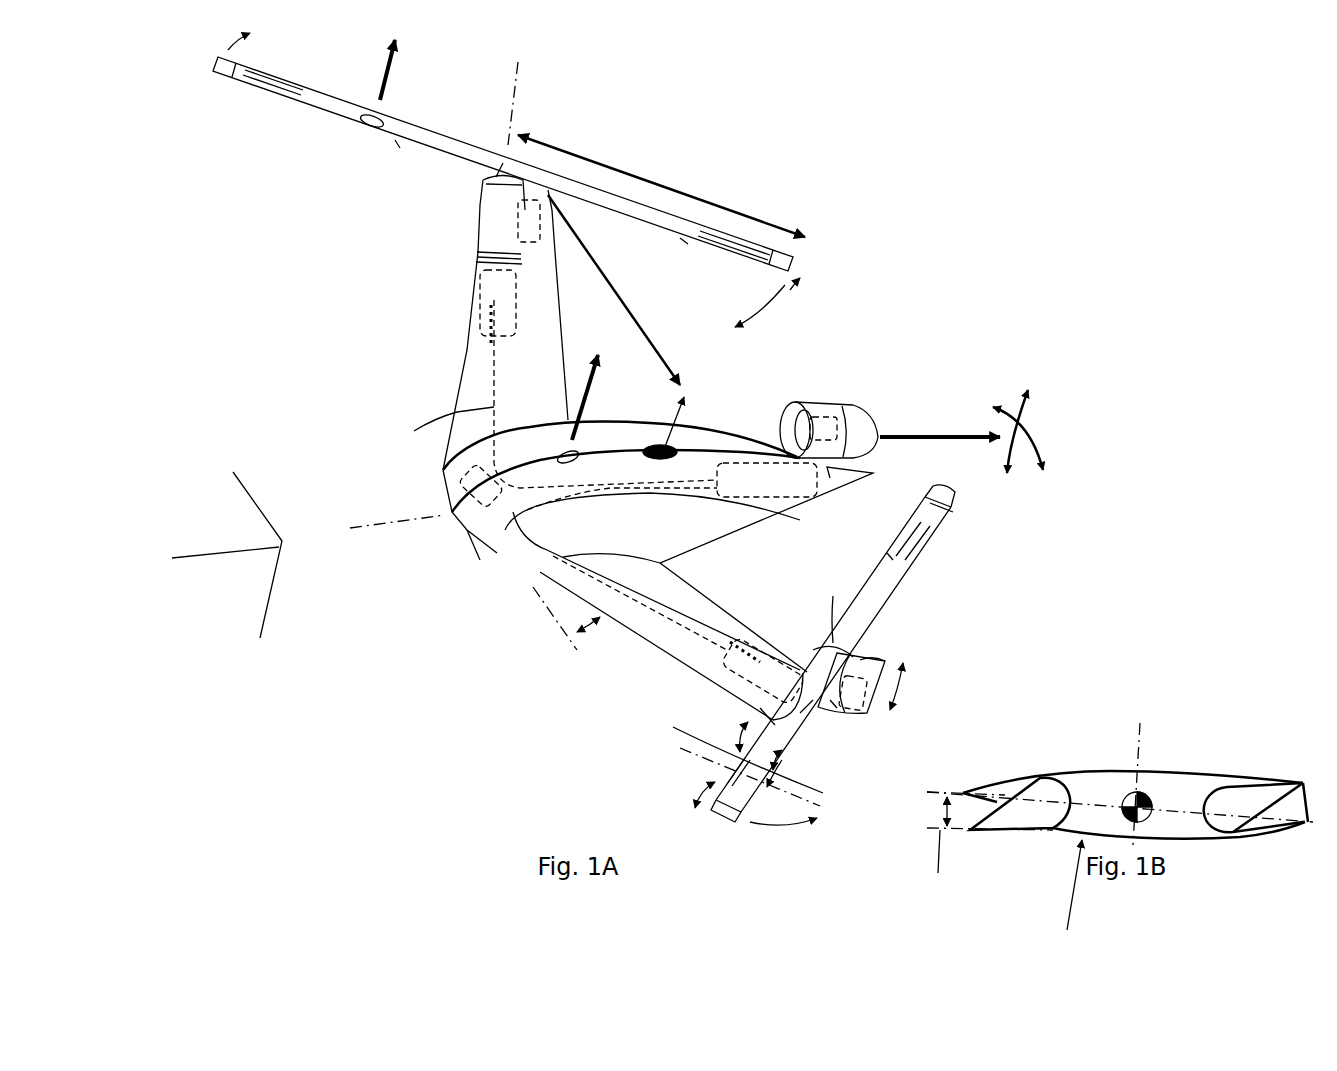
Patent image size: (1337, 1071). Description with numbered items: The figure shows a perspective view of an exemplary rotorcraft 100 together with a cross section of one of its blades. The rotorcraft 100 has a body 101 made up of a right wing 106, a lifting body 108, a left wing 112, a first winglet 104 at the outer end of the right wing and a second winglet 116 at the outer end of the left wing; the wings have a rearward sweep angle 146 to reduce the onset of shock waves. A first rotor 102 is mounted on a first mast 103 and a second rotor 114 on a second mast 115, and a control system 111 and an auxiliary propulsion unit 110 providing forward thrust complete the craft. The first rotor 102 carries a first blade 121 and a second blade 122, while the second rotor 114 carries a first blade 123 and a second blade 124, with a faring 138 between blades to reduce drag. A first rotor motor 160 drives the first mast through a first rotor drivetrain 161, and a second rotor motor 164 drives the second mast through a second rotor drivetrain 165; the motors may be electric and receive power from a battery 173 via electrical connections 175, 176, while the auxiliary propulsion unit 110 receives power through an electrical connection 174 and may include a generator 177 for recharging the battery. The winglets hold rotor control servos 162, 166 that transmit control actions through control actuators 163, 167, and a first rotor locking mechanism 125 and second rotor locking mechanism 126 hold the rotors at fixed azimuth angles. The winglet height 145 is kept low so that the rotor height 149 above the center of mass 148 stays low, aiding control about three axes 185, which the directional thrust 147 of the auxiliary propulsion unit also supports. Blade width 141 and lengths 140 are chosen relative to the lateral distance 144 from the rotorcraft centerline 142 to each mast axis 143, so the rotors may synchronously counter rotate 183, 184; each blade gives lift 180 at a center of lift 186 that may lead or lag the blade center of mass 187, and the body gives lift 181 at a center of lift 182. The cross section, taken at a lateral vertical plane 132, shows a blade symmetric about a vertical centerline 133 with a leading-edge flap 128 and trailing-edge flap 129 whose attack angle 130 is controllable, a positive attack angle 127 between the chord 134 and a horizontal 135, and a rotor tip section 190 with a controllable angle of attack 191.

In FIG. 1A, the rotorcraft 100 is at (787, 86).
In FIG. 1A, the body 101 is at (302, 395).
In FIG. 1A, the first rotor 102 is at (300, 128).
In FIG. 1A, the first mast 103 is at (503, 220).
In FIG. 1A, the first winglet 104 is at (478, 193).
In FIG. 1A, the right wing 106 is at (465, 355).
In FIG. 1A, the lifting body 108 is at (443, 487).
In FIG. 1A, the auxiliary propulsion unit 110 is at (857, 402).
In FIG. 1A, the control system 111 is at (477, 520).
In FIG. 1A, the left wing 112 is at (670, 652).
In FIG. 1A, the second rotor 114 is at (918, 585).
In FIG. 1A, the second mast 115 is at (827, 703).
In FIG. 1A, the second winglet 116 is at (830, 700).
In FIG. 1A, the first blade 121 is at (397, 142).
In FIG. 1A, the second blade 122 is at (683, 240).
In FIG. 1A, the first blade 123 is at (770, 722).
In FIG. 1B, the first blade 123 is at (1113, 771).
In FIG. 1A, the second blade 124 is at (887, 552).
In FIG. 1A, the first rotor locking mechanism 125 is at (490, 313).
In FIG. 1A, the second rotor locking mechanism 126 is at (723, 645).
In FIG. 1A, the attack angle 127 is at (742, 722).
In FIG. 1B, the attack angle 127 is at (945, 815).
In FIG. 1A, the leading-edge flap 128 is at (778, 765).
In FIG. 1B, the leading-edge flap 128 is at (1007, 833).
In FIG. 1A, the trailing-edge flap 129 is at (724, 752).
In FIG. 1B, the trailing-edge flap 129 is at (1253, 783).
In FIG. 1A, the attack angle 130 is at (782, 780).
In FIG. 1A, the lateral vertical plane 132 is at (682, 749).
In FIG. 1B, the vertical centerline 133 is at (1137, 750).
In FIG. 1B, the chord 134 is at (942, 790).
In FIG. 1B, the horizontal 135 is at (941, 867).
In FIG. 1A, the faring 138 is at (831, 606).
In FIG. 1A, the lengths 140 is at (725, 207).
In FIG. 1A, the width 141 is at (808, 258).
In FIG. 1A, the rotorcraft centerline 142 is at (418, 522).
In FIG. 1A, the mast axis 143 is at (517, 88).
In FIG. 1A, the lateral distance 144 is at (630, 302).
In FIG. 1A, the winglet height 145 is at (900, 672).
In FIG. 1A, the rearward sweep angle 146 is at (595, 628).
In FIG. 1A, the directional thrust 147 is at (1027, 432).
In FIG. 1A, the center of mass 148 is at (655, 448).
In FIG. 1A, the rotor height 149 is at (683, 400).
In FIG. 1A, the first rotor motor 160 is at (478, 287).
In FIG. 1A, the first rotor drivetrain 161 is at (483, 262).
In FIG. 1A, the rotor control servo 162 is at (540, 218).
In FIG. 1A, the control actuator 163 is at (527, 184).
In FIG. 1A, the second rotor motor 164 is at (758, 658).
In FIG. 1A, the second rotor drivetrain 165 is at (813, 700).
In FIG. 1A, the rotor control servo 166 is at (847, 713).
In FIG. 1A, the control actuator 167 is at (873, 657).
In FIG. 1A, the battery 173 is at (760, 463).
In FIG. 1A, the electrical connection 174 is at (828, 468).
In FIG. 1A, the electrical connection 175 is at (414, 431).
In FIG. 1A, the electrical connection 176 is at (537, 545).
In FIG. 1A, the generator 177 is at (822, 418).
In FIG. 1A, the lift 180 is at (393, 66).
In FIG. 1B, the lift 180 is at (1078, 905).
In FIG. 1A, the lift 181 is at (591, 386).
In FIG. 1A, the center of lift 182 is at (578, 455).
In FIG. 1A, the counter rotation 183 is at (760, 320).
In FIG. 1A, the counter rotation 184 is at (862, 490).
In FIG. 1A, the three axes 185 is at (213, 505).
In FIG. 1A, the center of lift 186 is at (370, 130).
In FIG. 1B, the center of mass 187 is at (1145, 792).
In FIG. 1A, the rotor tip section 190 is at (213, 61).
In FIG. 1A, the angle of attack 191 is at (703, 782).